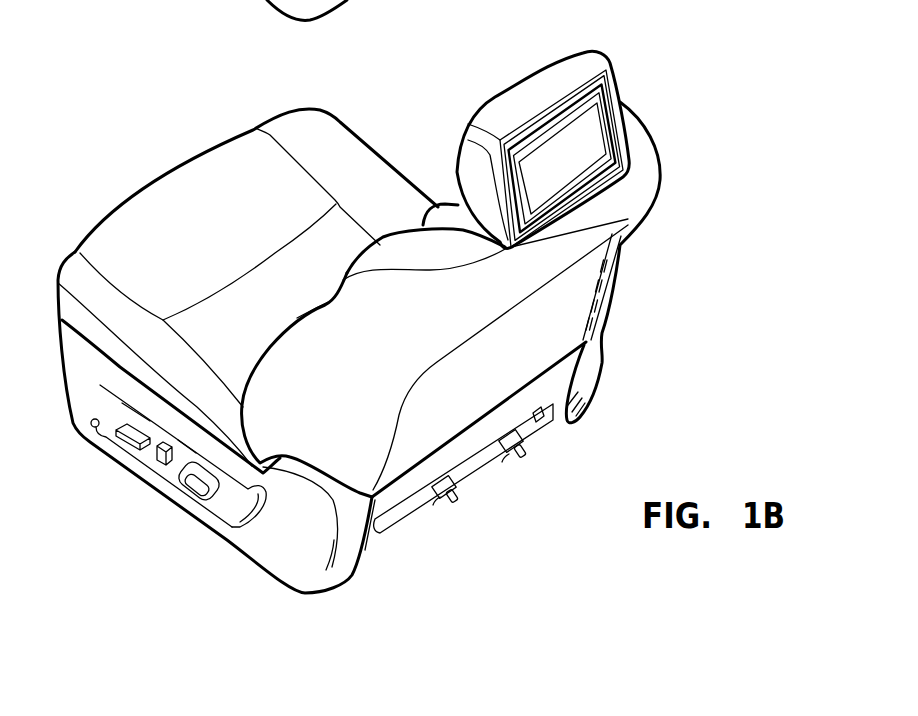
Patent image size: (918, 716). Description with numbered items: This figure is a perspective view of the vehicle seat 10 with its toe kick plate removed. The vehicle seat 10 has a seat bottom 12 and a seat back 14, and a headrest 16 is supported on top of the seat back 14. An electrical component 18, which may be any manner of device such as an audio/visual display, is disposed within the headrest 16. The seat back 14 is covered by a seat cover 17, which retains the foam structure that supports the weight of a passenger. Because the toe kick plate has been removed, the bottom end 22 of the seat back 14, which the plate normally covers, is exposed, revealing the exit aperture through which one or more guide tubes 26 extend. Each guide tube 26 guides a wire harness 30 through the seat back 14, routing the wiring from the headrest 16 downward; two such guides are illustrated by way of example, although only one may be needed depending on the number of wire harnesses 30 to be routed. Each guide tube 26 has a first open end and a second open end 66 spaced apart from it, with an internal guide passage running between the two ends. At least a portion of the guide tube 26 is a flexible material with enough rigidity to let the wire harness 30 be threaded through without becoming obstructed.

The vehicle seat 10 is at (744, 83).
The seat bottom 12 is at (310, 133).
The seat back 14 is at (609, 213).
The headrest 16 is at (563, 63).
The seat cover 17 is at (348, 382).
The electrical component 18 is at (572, 147).
The bottom end 22 is at (400, 513).
The guide tube 26 is at (453, 480).
The wire harness 30 is at (458, 491).
The second open end 66 is at (437, 500).